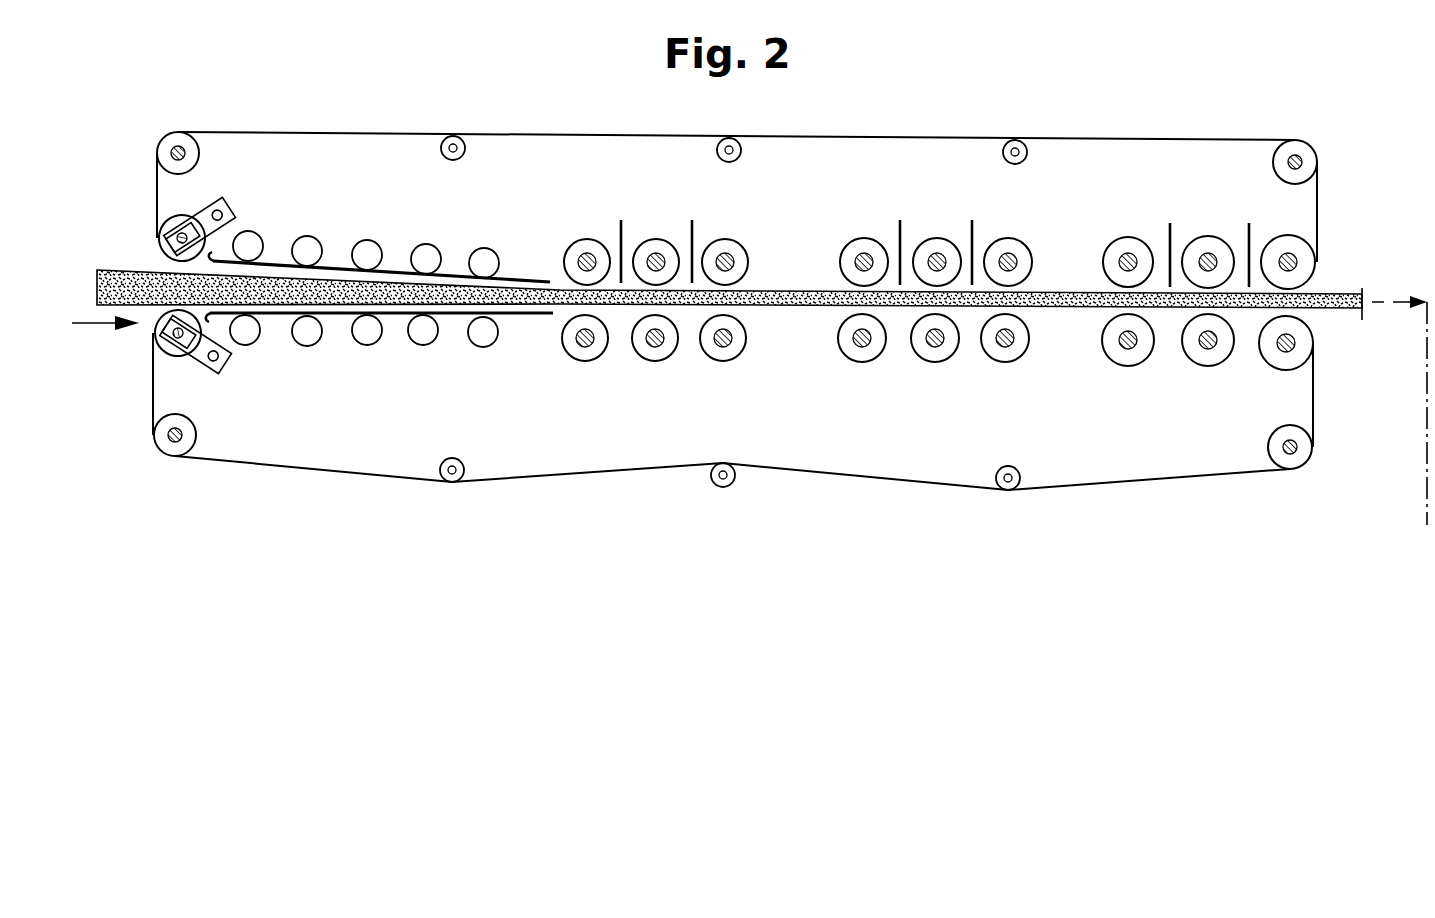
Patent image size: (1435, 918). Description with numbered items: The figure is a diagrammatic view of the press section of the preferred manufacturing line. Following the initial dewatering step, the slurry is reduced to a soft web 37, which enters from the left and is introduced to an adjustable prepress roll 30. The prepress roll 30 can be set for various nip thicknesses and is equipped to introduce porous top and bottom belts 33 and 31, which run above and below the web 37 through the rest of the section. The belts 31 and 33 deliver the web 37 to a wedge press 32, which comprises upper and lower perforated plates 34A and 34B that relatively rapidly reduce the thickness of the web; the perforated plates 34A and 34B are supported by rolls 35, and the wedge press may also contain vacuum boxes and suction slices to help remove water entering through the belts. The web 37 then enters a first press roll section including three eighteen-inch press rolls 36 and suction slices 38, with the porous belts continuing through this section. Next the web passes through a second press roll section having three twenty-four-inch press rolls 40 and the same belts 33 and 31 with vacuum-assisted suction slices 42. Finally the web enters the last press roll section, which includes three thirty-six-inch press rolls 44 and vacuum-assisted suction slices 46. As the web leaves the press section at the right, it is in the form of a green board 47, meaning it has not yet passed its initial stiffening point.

The adjustable prepress roll 30 is at (185, 214).
The porous bottom belt 31 is at (1313, 415).
The wedge press 32 is at (367, 230).
The porous top belt 33 is at (1318, 205).
The upper perforated plate 34A is at (450, 272).
The lower perforated plate 34B is at (455, 315).
The rolls 35 is at (300, 236).
The press rolls 36 is at (585, 239).
The soft web 37 is at (136, 268).
The suction slices 38 is at (688, 235).
The press rolls 40 is at (860, 238).
The vacuum-assisted suction slices 42 is at (968, 235).
The press rolls 44 is at (1125, 237).
The vacuum-assisted suction slices 46 is at (1245, 235).
The green board 47 is at (1340, 298).